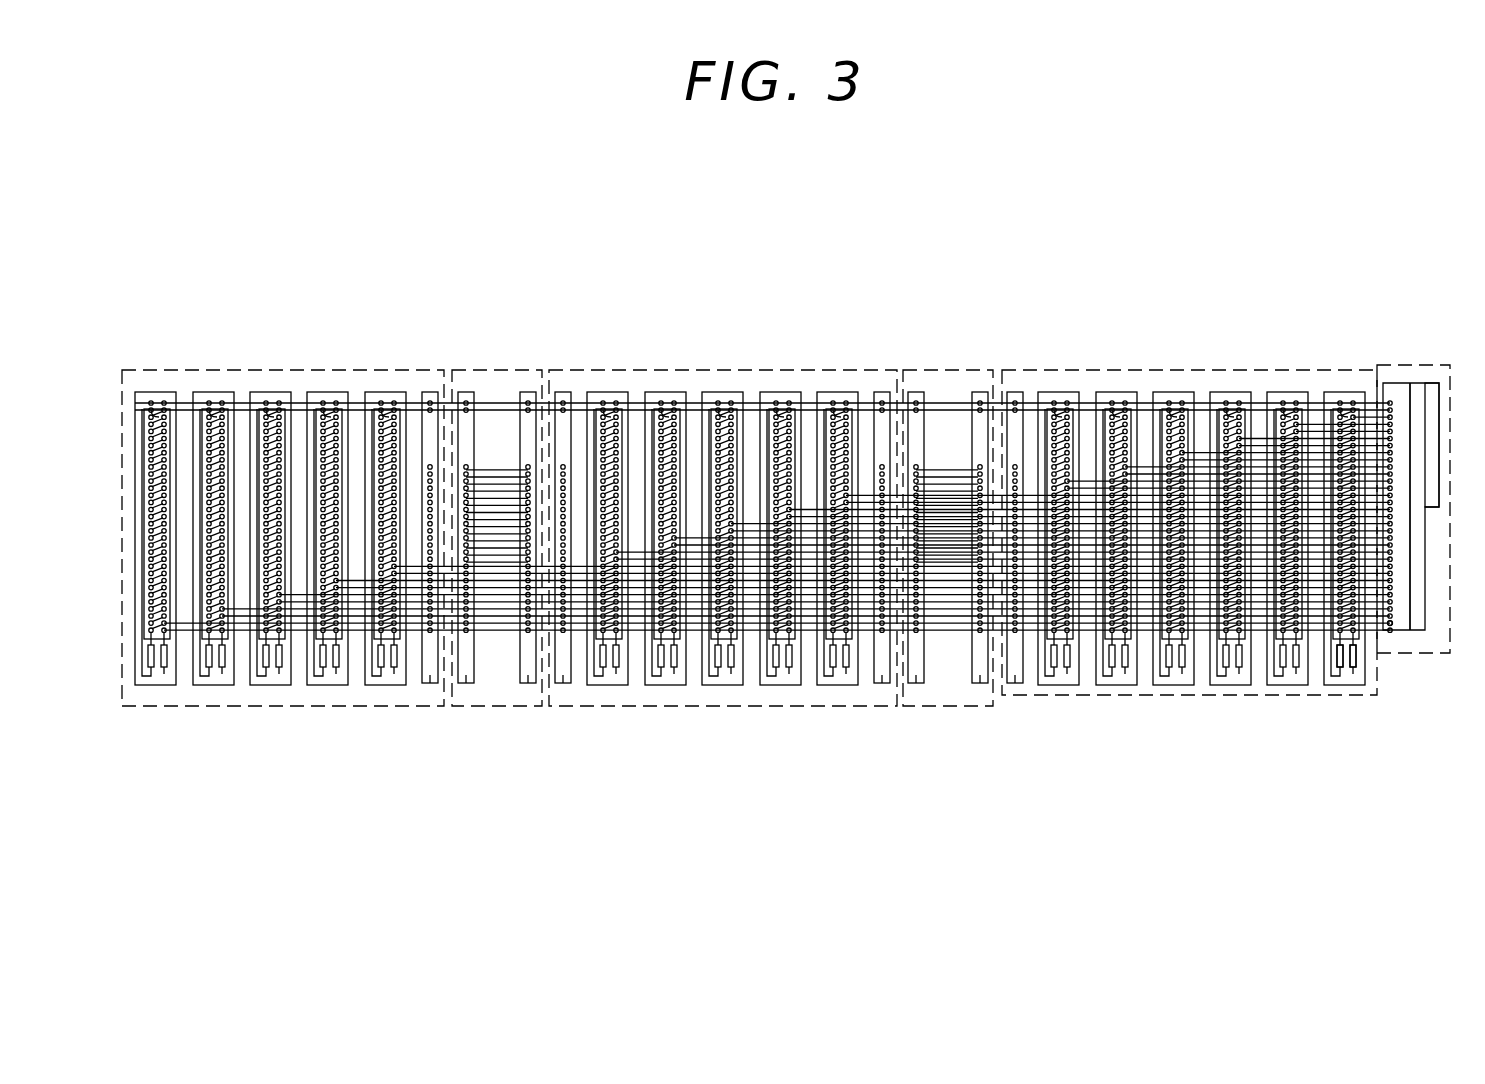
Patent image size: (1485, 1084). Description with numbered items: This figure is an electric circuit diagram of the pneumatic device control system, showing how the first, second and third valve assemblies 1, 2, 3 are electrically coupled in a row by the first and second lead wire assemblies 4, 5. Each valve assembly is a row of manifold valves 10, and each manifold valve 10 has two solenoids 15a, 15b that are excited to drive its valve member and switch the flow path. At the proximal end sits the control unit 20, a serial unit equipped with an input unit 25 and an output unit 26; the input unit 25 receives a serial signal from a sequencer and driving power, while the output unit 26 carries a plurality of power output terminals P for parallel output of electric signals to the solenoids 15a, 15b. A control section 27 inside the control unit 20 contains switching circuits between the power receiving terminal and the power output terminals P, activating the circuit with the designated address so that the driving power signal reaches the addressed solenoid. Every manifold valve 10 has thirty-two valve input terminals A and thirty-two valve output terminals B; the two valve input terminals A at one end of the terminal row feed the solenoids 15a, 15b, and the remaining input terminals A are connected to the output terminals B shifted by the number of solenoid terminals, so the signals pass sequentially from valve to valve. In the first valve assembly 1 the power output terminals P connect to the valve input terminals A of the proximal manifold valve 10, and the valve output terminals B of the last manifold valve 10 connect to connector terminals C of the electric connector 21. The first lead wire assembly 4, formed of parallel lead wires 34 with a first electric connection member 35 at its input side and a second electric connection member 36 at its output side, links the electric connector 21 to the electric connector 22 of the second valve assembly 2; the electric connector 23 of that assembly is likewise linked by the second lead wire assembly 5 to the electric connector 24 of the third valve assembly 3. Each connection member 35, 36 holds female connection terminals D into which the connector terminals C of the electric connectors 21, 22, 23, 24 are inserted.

The first valve assembly 1 is at (1189, 449).
The second valve assembly 2 is at (723, 455).
The third valve assembly 3 is at (283, 459).
The first lead wire assembly 4 is at (948, 460).
The second lead wire assembly 5 is at (499, 455).
The manifold valve 10 is at (218, 380).
The solenoid 15a is at (1355, 665).
The solenoid 15b is at (1345, 645).
The control unit 20 is at (1397, 496).
The electric connector 21 is at (1013, 390).
The electric connector 22 is at (882, 390).
The electric connector 23 is at (565, 390).
The electric connector 24 is at (430, 390).
The input unit 25 is at (1432, 392).
The output unit 26 is at (1405, 385).
The control section 27 is at (1420, 590).
The lead wires 34 is at (721, 550).
The first electric connection member 35 is at (530, 683).
The second electric connection member 36 is at (466, 683).
The valve input terminal A is at (394, 632).
The valve output terminal B is at (615, 632).
The connector terminal C is at (430, 632).
The female connection terminal D is at (528, 632).
The power output terminal P is at (1390, 625).